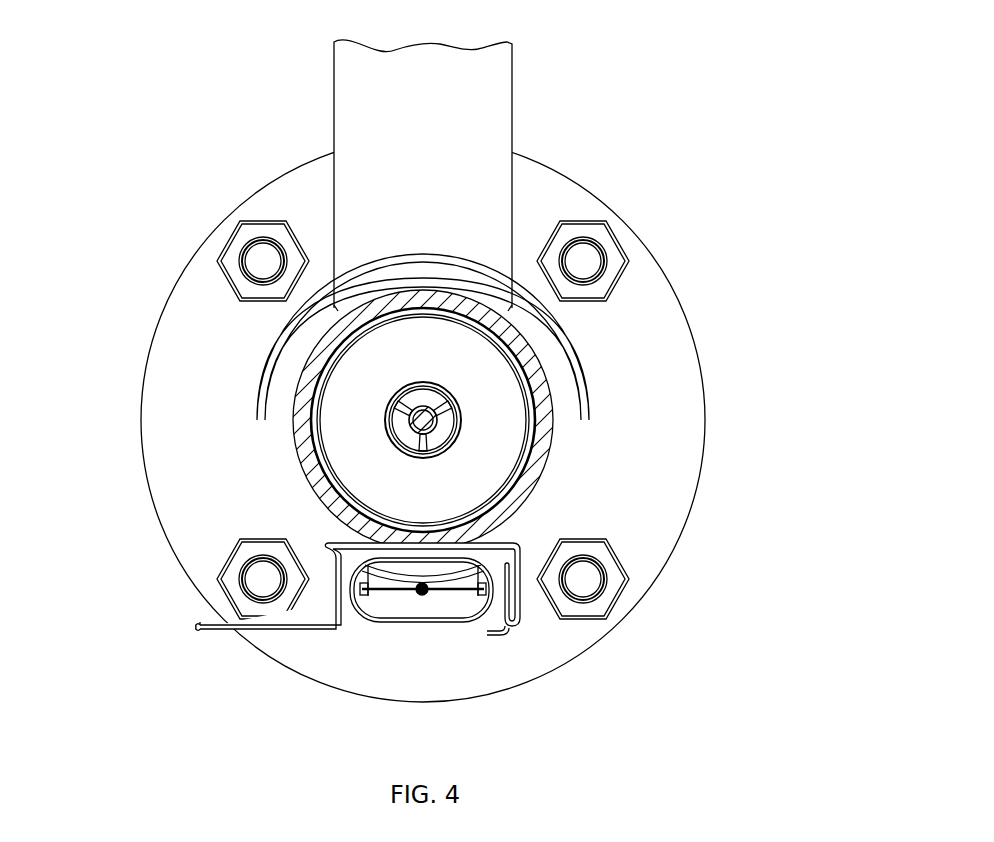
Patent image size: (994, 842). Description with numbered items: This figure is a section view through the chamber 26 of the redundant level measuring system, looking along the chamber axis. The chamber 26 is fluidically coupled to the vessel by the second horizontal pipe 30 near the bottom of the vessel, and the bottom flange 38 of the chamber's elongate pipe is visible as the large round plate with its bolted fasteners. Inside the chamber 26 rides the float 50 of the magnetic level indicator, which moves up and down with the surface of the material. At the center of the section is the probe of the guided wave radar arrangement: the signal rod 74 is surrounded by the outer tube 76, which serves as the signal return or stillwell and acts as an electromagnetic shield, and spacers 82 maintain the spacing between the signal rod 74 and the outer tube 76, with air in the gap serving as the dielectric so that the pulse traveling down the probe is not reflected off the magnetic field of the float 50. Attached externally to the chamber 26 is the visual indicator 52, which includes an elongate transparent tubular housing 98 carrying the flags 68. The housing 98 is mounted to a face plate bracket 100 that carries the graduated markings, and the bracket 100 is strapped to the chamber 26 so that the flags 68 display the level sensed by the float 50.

The second horizontal pipe 30 is at (518, 194).
The bottom flange 38 is at (477, 371).
The chamber 26 is at (288, 412).
The float 50 is at (503, 405).
The outer tube 76 is at (393, 420).
The spacers 82 is at (415, 439).
The signal rod 74 is at (423, 420).
The visual indicator 52 is at (383, 646).
The face plate bracket 100 is at (318, 626).
The tubular housing 98 is at (391, 618).
The flags 68 is at (452, 590).